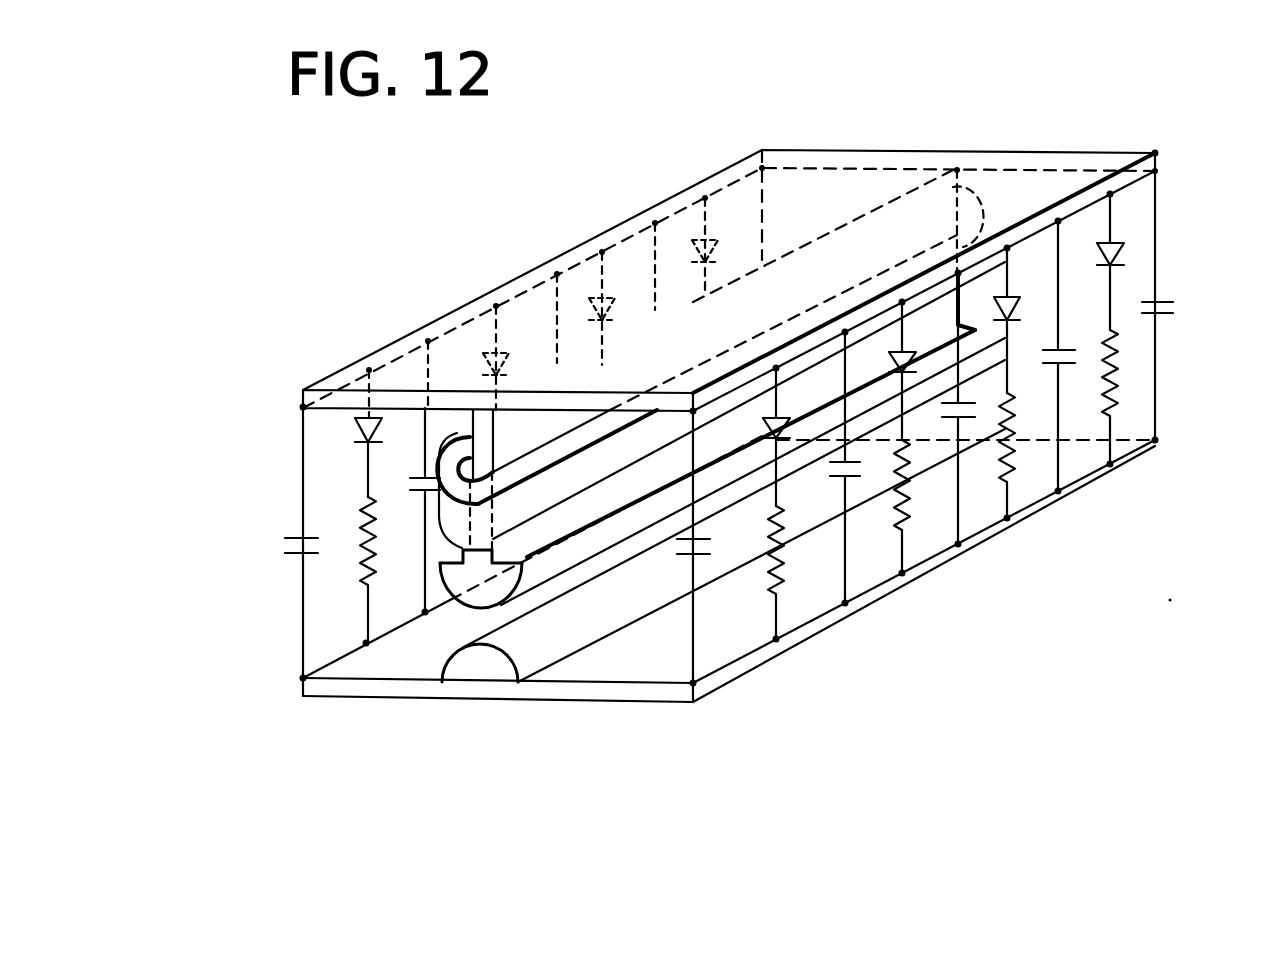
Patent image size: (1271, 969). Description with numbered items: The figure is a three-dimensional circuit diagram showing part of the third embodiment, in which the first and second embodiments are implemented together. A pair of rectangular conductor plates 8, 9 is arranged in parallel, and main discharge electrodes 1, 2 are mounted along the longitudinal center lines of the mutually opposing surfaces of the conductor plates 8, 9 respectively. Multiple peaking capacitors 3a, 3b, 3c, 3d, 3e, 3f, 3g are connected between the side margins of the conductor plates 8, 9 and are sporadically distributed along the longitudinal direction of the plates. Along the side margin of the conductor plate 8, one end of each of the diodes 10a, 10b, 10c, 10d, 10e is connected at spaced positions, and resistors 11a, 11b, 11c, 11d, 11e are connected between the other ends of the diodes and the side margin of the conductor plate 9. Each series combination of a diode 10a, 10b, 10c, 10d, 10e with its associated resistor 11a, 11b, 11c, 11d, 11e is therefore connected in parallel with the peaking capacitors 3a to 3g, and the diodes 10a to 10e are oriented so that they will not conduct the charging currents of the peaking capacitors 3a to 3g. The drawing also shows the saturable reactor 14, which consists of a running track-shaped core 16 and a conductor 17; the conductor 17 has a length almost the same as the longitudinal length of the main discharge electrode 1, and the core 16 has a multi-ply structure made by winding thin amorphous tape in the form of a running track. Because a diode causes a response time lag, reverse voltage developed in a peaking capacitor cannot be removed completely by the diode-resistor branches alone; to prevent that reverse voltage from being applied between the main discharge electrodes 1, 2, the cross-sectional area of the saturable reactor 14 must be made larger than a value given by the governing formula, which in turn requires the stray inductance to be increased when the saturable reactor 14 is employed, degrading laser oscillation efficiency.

The main discharge electrode 1 is at (466, 600).
The main discharge electrode 2 is at (476, 660).
The peaking capacitor 3a is at (716, 558).
The peaking capacitor 3b is at (850, 468).
The peaking capacitor 3c is at (968, 420).
The peaking capacitor 3d is at (1063, 345).
The peaking capacitor 3e is at (1172, 309).
The peaking capacitor 3f is at (283, 547).
The peaking capacitor 3g is at (410, 484).
The conductor plate 8 is at (862, 157).
The conductor plate 9 is at (597, 688).
The diode 10a is at (790, 440).
The diode 10b is at (906, 375).
The diode 10c is at (1003, 295).
The diode 10d is at (1126, 256).
The diode 10e is at (358, 432).
The resistor 11a is at (772, 600).
The resistor 11b is at (910, 505).
The resistor 11c is at (1015, 455).
The resistor 11d is at (1120, 372).
The resistor 11e is at (360, 572).
The saturable reactor 14 is at (446, 466).
The core 16 is at (356, 618).
The conductor 17 is at (476, 432).